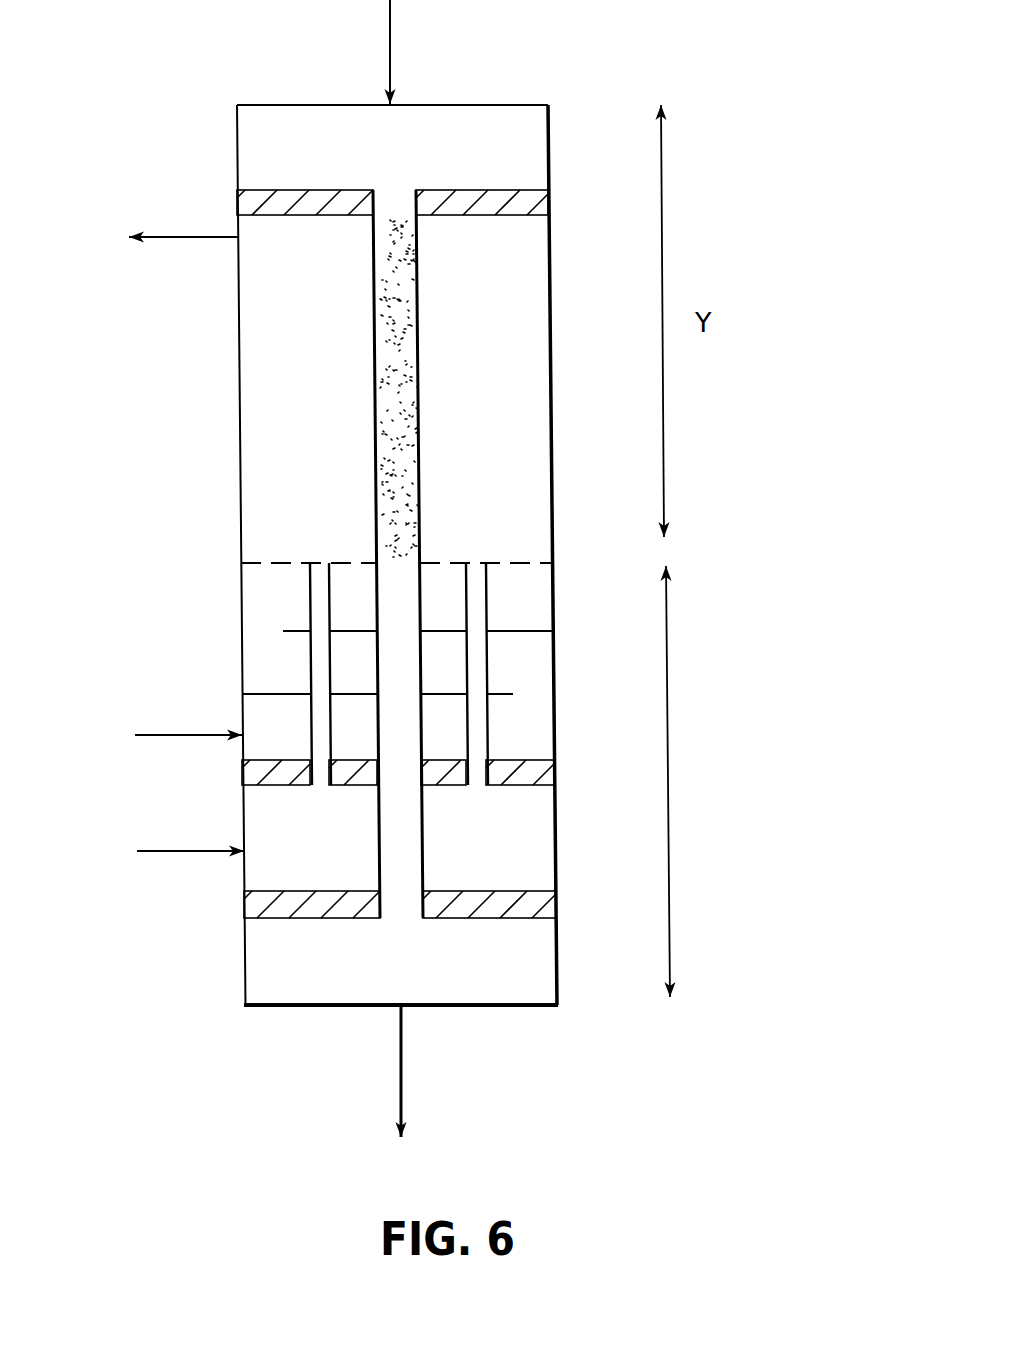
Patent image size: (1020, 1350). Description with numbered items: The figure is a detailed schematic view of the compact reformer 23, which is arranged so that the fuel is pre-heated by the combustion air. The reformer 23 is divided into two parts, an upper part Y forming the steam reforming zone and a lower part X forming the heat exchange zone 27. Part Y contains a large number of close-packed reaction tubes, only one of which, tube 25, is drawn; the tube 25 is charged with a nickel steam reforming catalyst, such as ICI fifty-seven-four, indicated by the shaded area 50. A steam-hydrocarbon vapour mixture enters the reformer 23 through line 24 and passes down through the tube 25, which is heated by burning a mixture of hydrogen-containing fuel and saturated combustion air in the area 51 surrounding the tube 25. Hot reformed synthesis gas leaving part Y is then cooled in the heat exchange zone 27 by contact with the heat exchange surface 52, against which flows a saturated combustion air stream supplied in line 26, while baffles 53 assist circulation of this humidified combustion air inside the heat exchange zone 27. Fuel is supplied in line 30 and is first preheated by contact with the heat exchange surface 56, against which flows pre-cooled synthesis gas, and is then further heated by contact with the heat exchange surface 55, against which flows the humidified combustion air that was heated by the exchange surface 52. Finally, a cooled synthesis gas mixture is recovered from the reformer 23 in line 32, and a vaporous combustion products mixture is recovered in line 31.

The compact reformer 23 is at (749, 536).
The line 24 is at (392, 25).
The reaction tube 25 is at (372, 271).
The line 26 is at (165, 735).
The heat exchange zone 27 is at (667, 782).
The line 30 is at (175, 851).
The line 31 is at (180, 237).
The line 32 is at (400, 1063).
The shaded area 50 is at (395, 430).
The area surrounding tube 51 is at (268, 345).
The heat exchange surface 52 is at (387, 652).
The baffles 53 is at (258, 690).
The heat exchange surface 55 is at (305, 578).
The heat exchange surface 56 is at (378, 831).